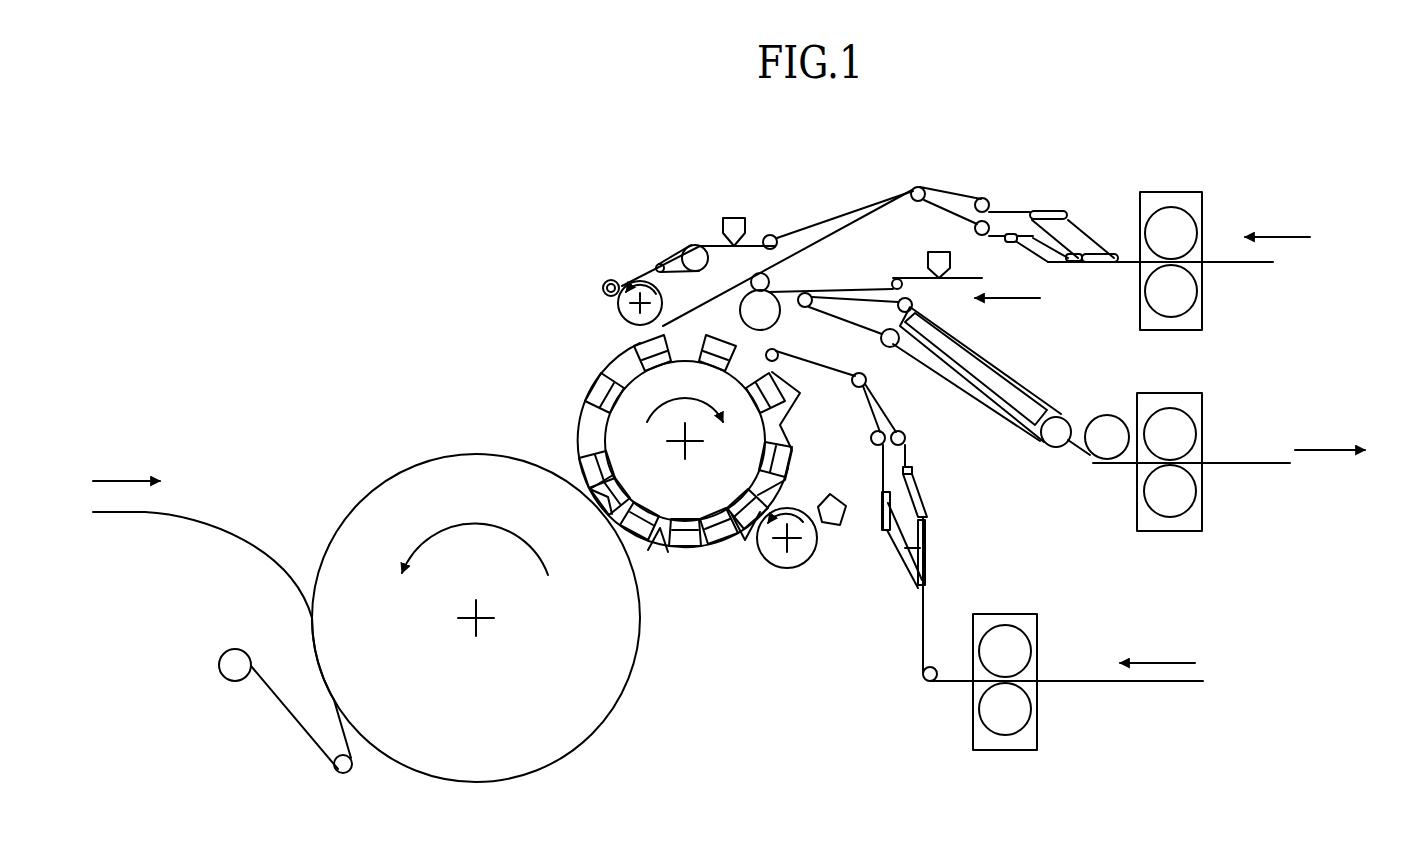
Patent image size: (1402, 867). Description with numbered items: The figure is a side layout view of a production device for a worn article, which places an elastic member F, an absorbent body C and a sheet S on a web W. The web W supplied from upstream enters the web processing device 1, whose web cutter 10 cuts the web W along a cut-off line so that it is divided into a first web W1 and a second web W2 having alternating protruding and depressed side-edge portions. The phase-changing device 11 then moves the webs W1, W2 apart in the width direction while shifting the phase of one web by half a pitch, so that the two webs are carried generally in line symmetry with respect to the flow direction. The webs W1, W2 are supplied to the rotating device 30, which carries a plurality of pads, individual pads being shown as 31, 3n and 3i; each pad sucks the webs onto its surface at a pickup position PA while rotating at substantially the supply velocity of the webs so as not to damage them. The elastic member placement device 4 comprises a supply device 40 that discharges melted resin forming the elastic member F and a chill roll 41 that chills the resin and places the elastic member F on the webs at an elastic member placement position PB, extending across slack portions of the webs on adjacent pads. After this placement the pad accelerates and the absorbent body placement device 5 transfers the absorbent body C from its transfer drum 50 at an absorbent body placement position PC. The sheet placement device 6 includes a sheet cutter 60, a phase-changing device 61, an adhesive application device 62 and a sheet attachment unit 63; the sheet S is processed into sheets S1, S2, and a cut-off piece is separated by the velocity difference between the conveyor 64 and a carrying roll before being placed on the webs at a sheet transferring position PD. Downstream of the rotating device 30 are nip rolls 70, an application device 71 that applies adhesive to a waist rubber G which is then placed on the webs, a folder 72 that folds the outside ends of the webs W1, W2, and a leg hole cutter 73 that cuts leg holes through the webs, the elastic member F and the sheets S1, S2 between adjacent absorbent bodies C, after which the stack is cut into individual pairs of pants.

The web processing device 1 is at (901, 549).
The web cutter 10 is at (980, 642).
The phase-changing device 11 is at (927, 545).
The rotating device 30 is at (646, 443).
The pad 31 is at (689, 443).
The pad 3n is at (689, 443).
The pad 3i is at (689, 443).
The elastic member placement device 4 is at (809, 592).
The supply device 40 is at (832, 530).
The chill roll 41 is at (787, 570).
The absorbent body placement device 5 is at (501, 631).
The transfer drum 50 is at (633, 686).
The sheet placement device 6 is at (659, 219).
The sheet cutter 60 is at (1168, 192).
The phase-changing device 61 is at (1032, 208).
The adhesive application device 62 is at (733, 217).
The sheet attachment unit 63 is at (605, 290).
The conveyor 64 is at (693, 246).
The nip rolls 70 is at (770, 280).
The application device 71 is at (926, 258).
The folder 72 is at (1022, 378).
The leg hole cutter 73 is at (1176, 394).
The absorbent body C is at (228, 537).
The elastic member F is at (700, 548).
The waist rubber G is at (985, 280).
The pickup position PA is at (793, 393).
The elastic member placement position PB is at (748, 552).
The absorbent body placement position PC is at (574, 470).
The sheet transferring position PD is at (620, 330).
The sheet S is at (1235, 263).
The first sheet S1 is at (794, 222).
The second sheet S2 is at (860, 205).
The web W is at (1135, 688).
The first web W1 is at (1111, 445).
The second web W2 is at (838, 365).